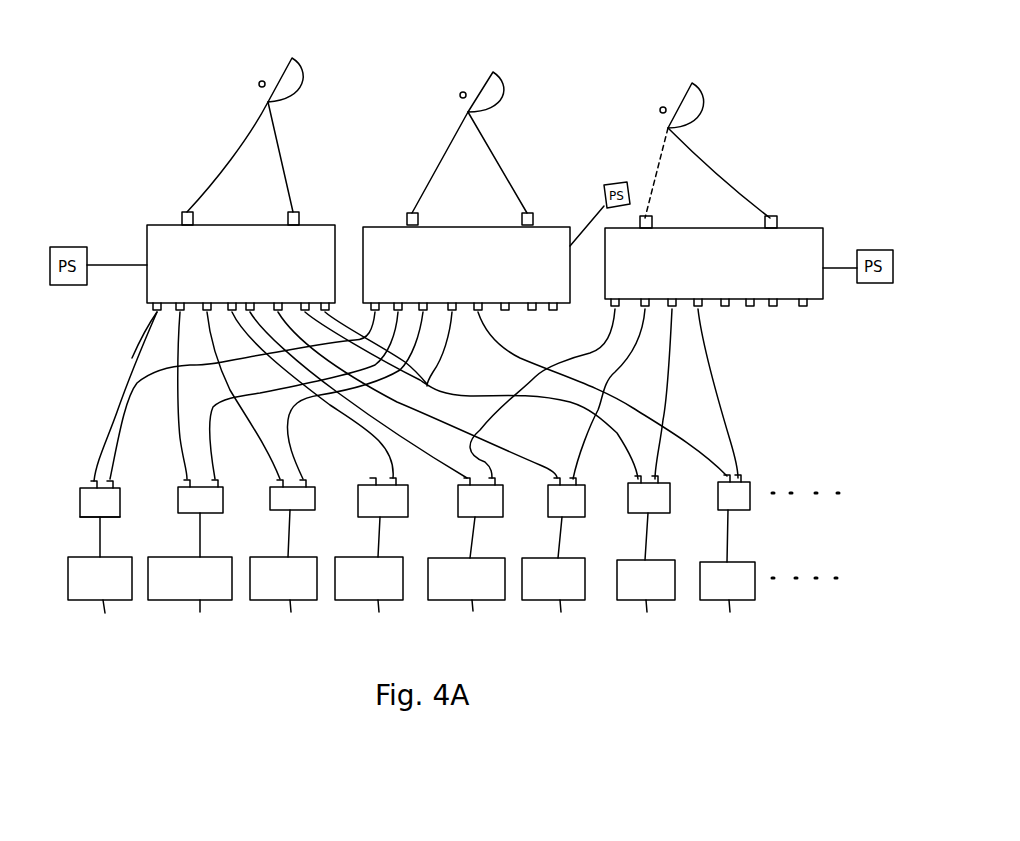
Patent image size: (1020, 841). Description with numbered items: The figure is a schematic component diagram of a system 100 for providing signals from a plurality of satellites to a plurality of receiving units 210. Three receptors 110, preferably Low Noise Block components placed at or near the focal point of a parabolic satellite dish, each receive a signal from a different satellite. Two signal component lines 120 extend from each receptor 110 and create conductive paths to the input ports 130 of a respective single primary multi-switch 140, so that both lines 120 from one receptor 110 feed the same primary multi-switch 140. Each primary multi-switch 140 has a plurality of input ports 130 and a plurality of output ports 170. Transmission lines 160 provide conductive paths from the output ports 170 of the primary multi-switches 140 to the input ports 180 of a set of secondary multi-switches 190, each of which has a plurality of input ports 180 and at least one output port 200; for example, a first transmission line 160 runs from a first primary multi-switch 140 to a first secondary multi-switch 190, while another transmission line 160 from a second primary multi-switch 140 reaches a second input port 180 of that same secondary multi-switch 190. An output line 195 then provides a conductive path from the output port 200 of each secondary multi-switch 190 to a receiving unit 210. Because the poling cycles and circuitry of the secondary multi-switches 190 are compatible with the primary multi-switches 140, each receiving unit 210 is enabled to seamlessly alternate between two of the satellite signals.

The system 100 is at (648, 74).
The receptor 110 is at (259, 86).
The signal component line 120 is at (228, 153).
The input port 130 is at (180, 212).
The primary multi-switch 140 is at (313, 245).
The transmission line 160 is at (117, 398).
The output port 170 is at (152, 312).
The input port 180 is at (110, 481).
The secondary multi-switch 190 is at (745, 491).
The output line 195 is at (108, 540).
The output port 200 is at (120, 520).
The receiving unit 210 is at (745, 588).